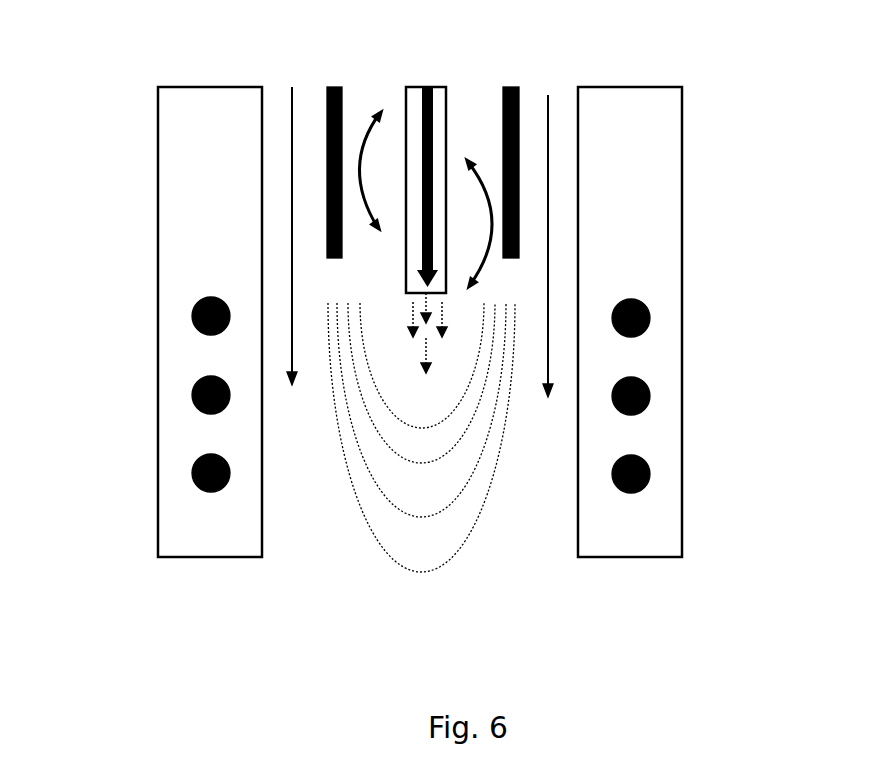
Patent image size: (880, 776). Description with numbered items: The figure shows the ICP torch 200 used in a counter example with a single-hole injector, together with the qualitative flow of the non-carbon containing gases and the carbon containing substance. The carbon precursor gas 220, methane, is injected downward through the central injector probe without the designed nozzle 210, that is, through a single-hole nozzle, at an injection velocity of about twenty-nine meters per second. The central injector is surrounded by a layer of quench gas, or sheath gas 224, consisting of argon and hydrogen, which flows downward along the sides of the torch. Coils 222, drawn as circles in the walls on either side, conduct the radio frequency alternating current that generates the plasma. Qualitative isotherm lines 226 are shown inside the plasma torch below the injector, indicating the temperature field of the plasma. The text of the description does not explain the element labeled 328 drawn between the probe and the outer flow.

The ICP torch 200 is at (411, 293).
The nozzle 210 is at (271, 156).
The carbon precursor gas 220 is at (422, 238).
The coils 222 is at (191, 317).
The quench gas (sheath gas) 224 is at (293, 388).
The qualitative isotherm lines 226 is at (480, 468).
The shield plate 328 is at (490, 184).